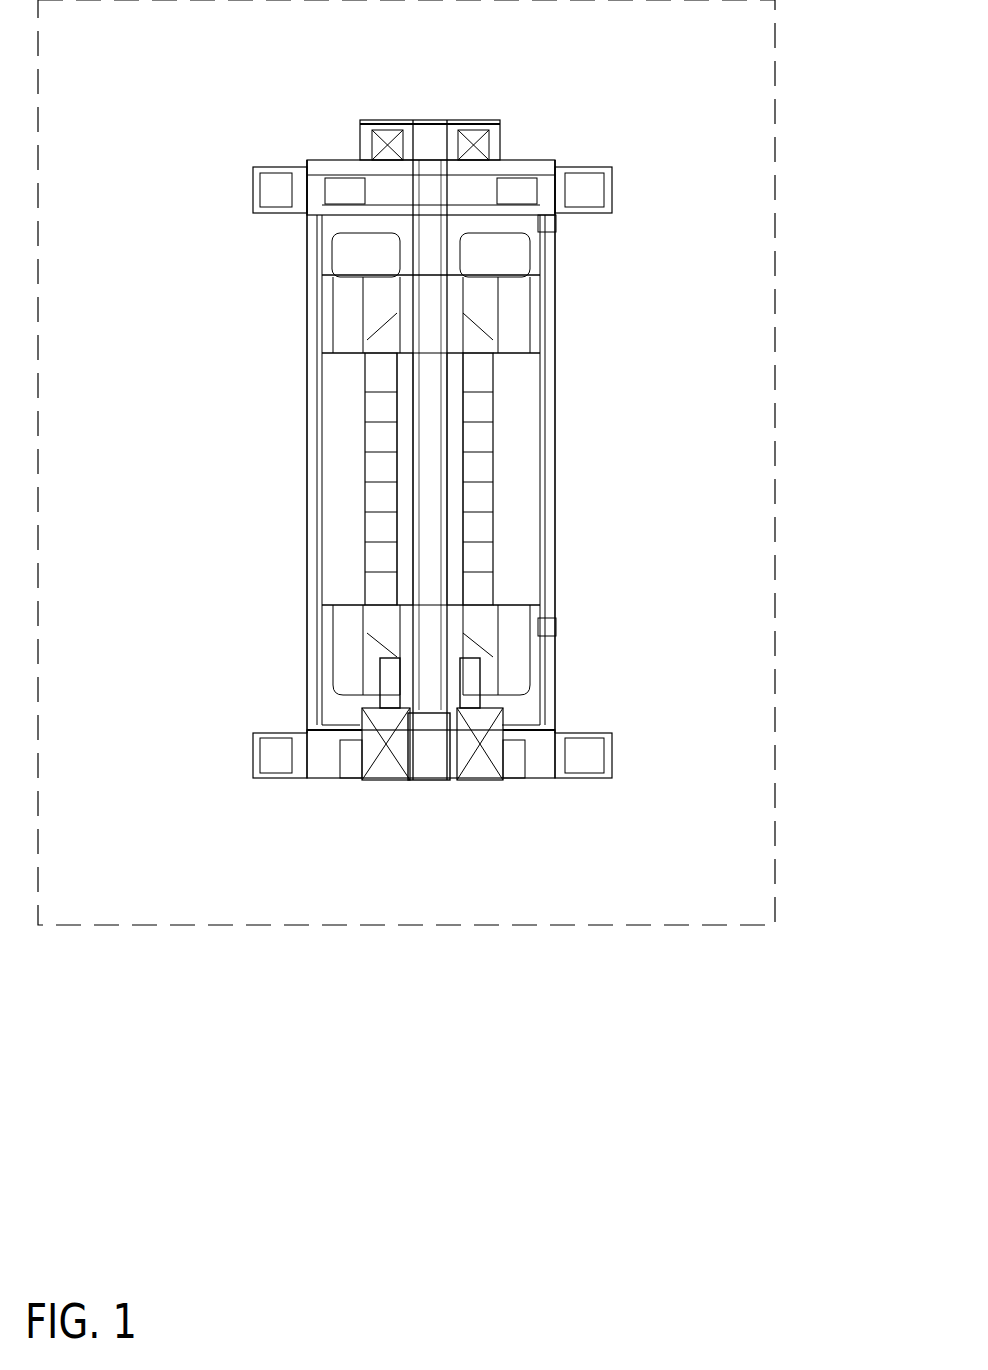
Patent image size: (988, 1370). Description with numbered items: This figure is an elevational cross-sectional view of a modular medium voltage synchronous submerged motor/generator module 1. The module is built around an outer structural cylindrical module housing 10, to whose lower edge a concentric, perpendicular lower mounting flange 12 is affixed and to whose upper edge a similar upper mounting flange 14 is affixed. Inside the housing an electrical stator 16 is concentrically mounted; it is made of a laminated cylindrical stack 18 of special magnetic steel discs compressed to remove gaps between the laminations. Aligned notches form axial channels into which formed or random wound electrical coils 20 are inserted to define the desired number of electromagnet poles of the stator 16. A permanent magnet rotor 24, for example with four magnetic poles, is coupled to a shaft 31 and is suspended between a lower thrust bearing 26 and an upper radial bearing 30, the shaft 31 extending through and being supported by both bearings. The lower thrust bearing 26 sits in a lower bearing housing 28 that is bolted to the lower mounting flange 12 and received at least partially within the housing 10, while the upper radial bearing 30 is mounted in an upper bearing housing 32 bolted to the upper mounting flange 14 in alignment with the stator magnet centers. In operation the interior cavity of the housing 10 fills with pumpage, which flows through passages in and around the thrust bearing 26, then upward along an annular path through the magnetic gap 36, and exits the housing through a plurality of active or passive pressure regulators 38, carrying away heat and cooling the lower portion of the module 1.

The modular medium voltage synchronous submerged motor/generator module 1 is at (778, 355).
The cylindrical module housing 10 is at (305, 420).
The lower mounting flange 12 is at (253, 755).
The upper mounting flange 14 is at (253, 195).
The electrical stator 16 is at (327, 493).
The laminated cylindrical stack 18 is at (515, 555).
The electrical coils 20 is at (348, 650).
The permanent magnet rotor 24 is at (493, 412).
The lower thrust bearing 26 is at (475, 752).
The lower bearing housing 28 is at (362, 752).
The upper radial bearing 30 is at (490, 125).
The shaft 31 is at (430, 305).
The upper bearing housing 32 is at (522, 160).
The magnetic gap 36 is at (493, 490).
The pressure regulators 38 is at (543, 225).